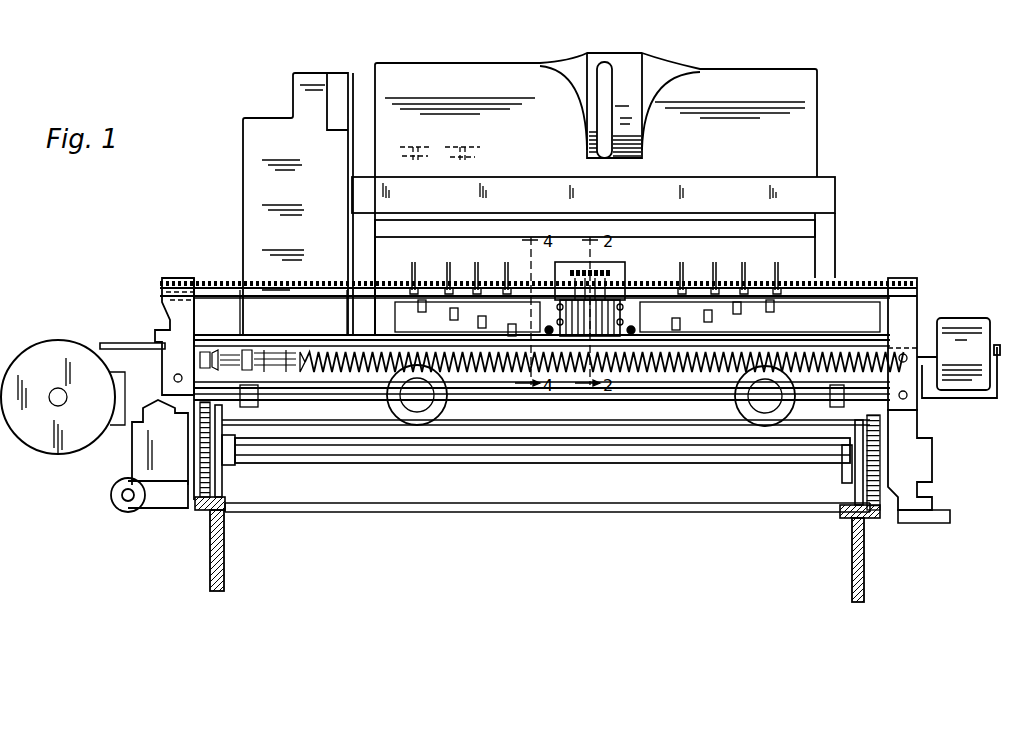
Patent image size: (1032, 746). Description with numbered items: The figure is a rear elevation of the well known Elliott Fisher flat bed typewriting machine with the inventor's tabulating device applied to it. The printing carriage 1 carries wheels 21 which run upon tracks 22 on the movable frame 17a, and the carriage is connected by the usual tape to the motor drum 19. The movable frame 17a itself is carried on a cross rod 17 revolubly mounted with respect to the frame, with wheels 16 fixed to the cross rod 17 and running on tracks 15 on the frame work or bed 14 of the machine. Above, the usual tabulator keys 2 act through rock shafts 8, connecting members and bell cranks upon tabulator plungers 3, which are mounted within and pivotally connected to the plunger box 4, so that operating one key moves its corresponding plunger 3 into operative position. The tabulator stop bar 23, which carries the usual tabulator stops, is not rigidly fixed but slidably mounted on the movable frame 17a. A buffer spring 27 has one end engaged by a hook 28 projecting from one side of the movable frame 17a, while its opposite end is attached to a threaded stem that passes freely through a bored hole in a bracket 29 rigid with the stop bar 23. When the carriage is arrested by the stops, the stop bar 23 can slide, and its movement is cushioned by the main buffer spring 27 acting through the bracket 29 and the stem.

The printing carriage 1 is at (773, 274).
The tabulator keys 2 is at (466, 147).
The tabulator plungers 3 is at (648, 300).
The plunger box 4 is at (622, 285).
The rock shafts 8 is at (491, 287).
The frame work or bed 14 is at (850, 545).
The tracks 15 is at (848, 508).
The wheels 16 is at (855, 478).
The cross rod 17 is at (652, 464).
The movable frame 17a is at (908, 320).
The motor drum 19 is at (58, 397).
The wheels 21 is at (447, 403).
The tracks 22 is at (602, 433).
The tabulator stop bar 23 is at (268, 340).
The buffer spring 27 is at (841, 362).
The hook 28 is at (847, 397).
The bracket 29 is at (162, 344).